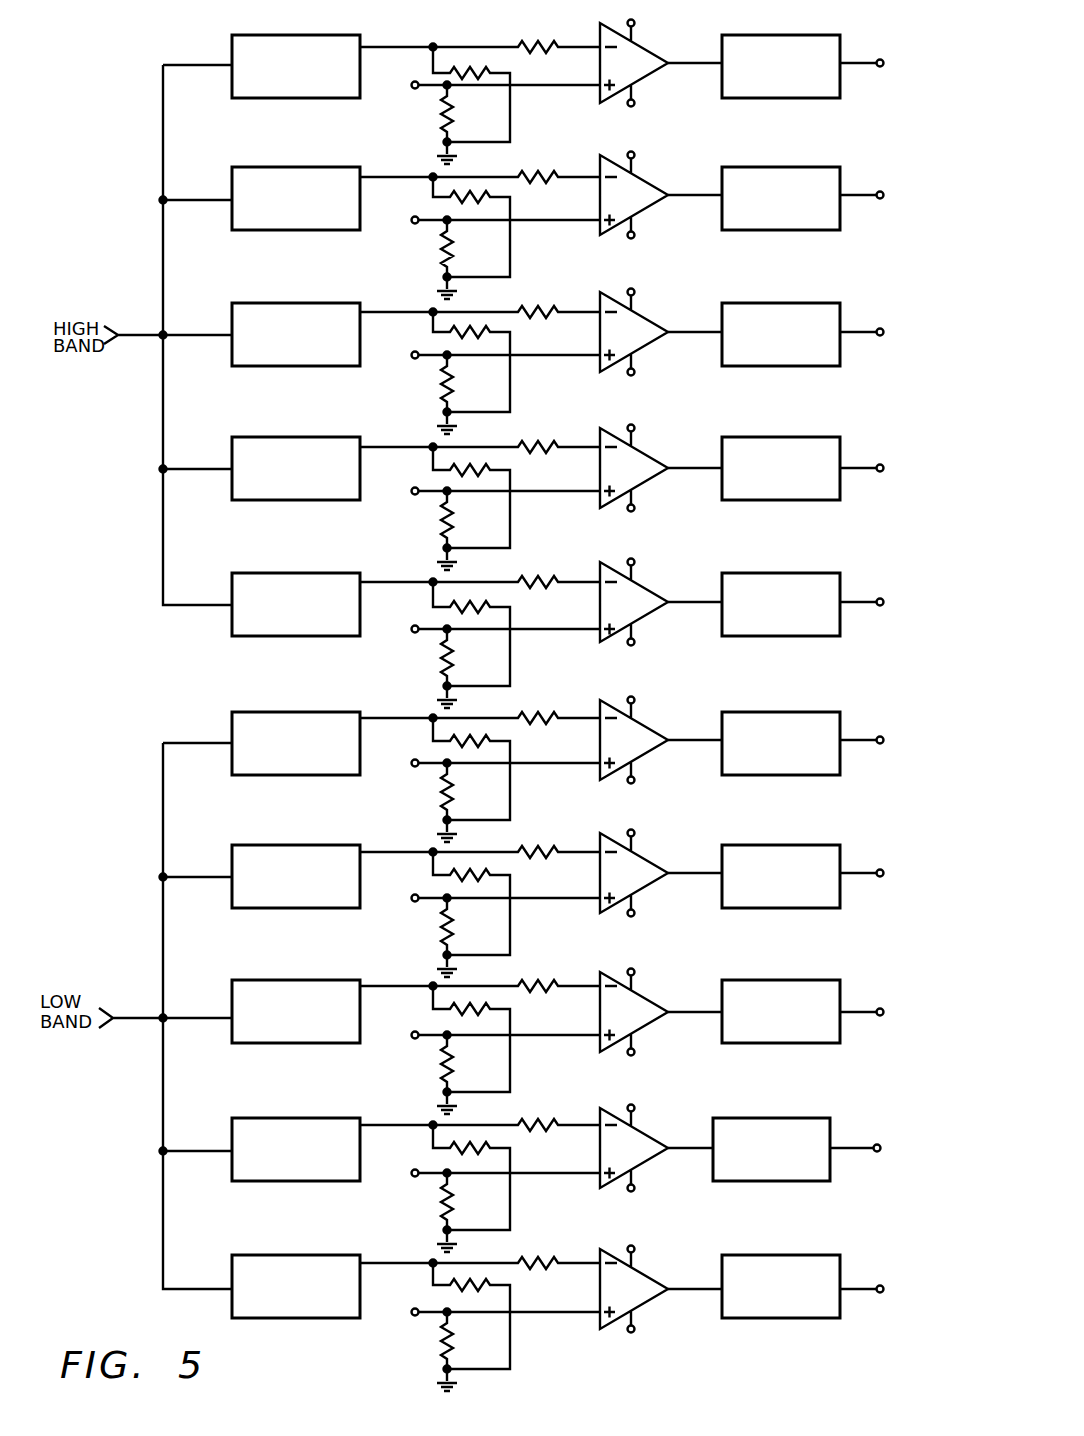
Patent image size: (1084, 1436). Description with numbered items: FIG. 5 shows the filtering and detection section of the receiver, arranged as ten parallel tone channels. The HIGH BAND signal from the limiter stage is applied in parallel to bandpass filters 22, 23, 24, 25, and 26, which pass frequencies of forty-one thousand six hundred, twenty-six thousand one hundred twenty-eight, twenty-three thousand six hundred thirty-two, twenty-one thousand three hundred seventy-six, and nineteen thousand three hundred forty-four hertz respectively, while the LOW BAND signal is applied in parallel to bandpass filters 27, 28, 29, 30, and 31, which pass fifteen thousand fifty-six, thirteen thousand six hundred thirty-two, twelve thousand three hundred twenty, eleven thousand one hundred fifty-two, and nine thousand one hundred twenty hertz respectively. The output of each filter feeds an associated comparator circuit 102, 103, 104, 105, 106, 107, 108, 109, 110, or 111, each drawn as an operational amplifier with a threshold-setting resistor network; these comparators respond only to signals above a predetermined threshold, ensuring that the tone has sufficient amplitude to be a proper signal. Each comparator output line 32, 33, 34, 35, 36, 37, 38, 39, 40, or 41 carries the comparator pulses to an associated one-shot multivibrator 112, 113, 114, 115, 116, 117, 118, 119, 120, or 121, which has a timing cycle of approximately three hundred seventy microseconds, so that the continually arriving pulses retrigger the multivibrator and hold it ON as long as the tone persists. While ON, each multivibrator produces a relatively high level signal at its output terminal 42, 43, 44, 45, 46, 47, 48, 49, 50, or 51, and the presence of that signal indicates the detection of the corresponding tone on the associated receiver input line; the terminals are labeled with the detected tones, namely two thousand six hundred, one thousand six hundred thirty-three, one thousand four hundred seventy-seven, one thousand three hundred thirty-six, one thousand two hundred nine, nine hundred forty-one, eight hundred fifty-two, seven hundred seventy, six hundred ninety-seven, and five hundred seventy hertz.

The bandpass filter 22 is at (232, 8).
The bandpass filter 23 is at (270, 184).
The bandpass filter 24 is at (270, 316).
The bandpass filter 25 is at (270, 456).
The bandpass filter 26 is at (271, 582).
The bandpass filter 27 is at (261, 725).
The bandpass filter 28 is at (270, 862).
The bandpass filter 29 is at (270, 995).
The bandpass filter 30 is at (270, 1132).
The bandpass filter 31 is at (271, 1264).
The comparator circuit 102 is at (597, 2).
The comparator circuit 103 is at (525, 210).
The comparator circuit 104 is at (525, 347).
The comparator circuit 105 is at (525, 480).
The comparator circuit 106 is at (525, 619).
The comparator circuit 107 is at (525, 751).
The comparator circuit 108 is at (525, 883).
The comparator circuit 109 is at (525, 1025).
The comparator circuit 110 is at (525, 1160).
The comparator circuit 111 is at (525, 1300).
The level detector 32 is at (686, 18).
The level detector 33 is at (695, 164).
The level detector 34 is at (695, 298).
The level detector 35 is at (695, 437).
The level detector 36 is at (695, 575).
The level detector 37 is at (695, 710).
The level detector 38 is at (695, 847).
The level detector 39 is at (695, 984).
The level detector 40 is at (690, 1120).
The level detector 41 is at (695, 1257).
The one-shot multivibrator 112 is at (798, 0).
The one-shot multivibrator 113 is at (781, 182).
The one-shot multivibrator 114 is at (781, 315).
The one-shot multivibrator 115 is at (781, 453).
The one-shot multivibrator 116 is at (781, 591).
The one-shot multivibrator 117 is at (781, 727).
The one-shot multivibrator 118 is at (781, 864).
The one-shot multivibrator 119 is at (781, 998).
The one-shot multivibrator 120 is at (771, 1137).
The one-shot multivibrator 121 is at (781, 1272).
The output terminal 42 is at (881, 24).
The output terminal 43 is at (888, 170).
The output terminal 44 is at (888, 303).
The output terminal 45 is at (888, 442).
The output terminal 46 is at (888, 579).
The output terminal 47 is at (882, 715).
The output terminal 48 is at (882, 852).
The output terminal 49 is at (882, 988).
The output terminal 50 is at (875, 1126).
The output terminal 51 is at (882, 1263).